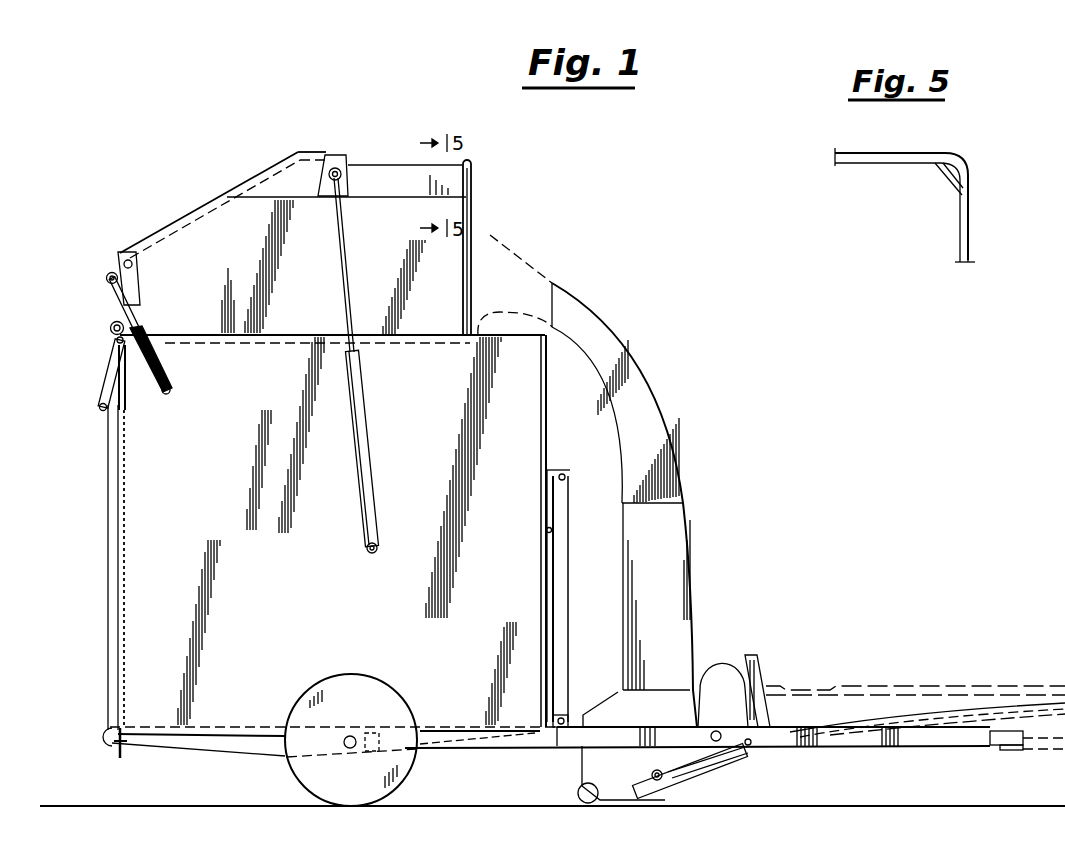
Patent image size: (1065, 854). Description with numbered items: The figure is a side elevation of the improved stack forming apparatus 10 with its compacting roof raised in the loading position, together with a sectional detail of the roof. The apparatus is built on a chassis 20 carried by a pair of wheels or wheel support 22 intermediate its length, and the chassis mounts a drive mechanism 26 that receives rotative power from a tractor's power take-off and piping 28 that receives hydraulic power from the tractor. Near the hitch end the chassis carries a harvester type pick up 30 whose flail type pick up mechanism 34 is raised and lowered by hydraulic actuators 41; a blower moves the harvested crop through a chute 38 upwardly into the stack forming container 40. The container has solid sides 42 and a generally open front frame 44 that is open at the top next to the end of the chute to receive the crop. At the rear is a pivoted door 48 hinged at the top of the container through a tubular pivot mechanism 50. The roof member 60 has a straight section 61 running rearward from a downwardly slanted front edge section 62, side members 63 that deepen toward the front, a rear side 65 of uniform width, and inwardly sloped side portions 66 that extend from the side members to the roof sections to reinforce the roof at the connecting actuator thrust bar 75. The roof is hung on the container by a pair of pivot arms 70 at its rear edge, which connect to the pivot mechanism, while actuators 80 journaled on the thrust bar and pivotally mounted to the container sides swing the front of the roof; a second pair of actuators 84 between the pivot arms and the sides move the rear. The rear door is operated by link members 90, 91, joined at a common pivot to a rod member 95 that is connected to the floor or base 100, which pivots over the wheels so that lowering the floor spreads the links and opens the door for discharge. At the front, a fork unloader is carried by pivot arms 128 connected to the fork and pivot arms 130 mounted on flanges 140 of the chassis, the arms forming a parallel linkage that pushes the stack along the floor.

In FIG. 1, the stack forming apparatus 10 is at (880, 541).
In FIG. 1, the chassis 20 is at (796, 747).
In FIG. 1, the wheels or wheel support 22 is at (400, 770).
In FIG. 1, the drive mechanism 26 is at (720, 680).
In FIG. 1, the piping 28 is at (1004, 705).
In FIG. 1, the harvester type pick up 30 is at (604, 766).
In FIG. 1, the flail type pick up mechanism 34 is at (688, 788).
In FIG. 1, the chute 38 is at (678, 478).
In FIG. 1, the stack forming container 40 is at (104, 657).
In FIG. 1, the hydraulic actuators 41 is at (724, 750).
In FIG. 1, the solid sides 42 is at (374, 592).
In FIG. 1, the open front frame 44 is at (548, 440).
In FIG. 1, the pivoted door 48 is at (108, 557).
In FIG. 1, the tubular pivot mechanism 50 is at (110, 326).
In FIG. 1, the roof member 60 is at (240, 181).
In FIG. 1, the straight section 61 is at (202, 205).
In FIG. 1, the downwardly slanted front edge section 62 is at (405, 165).
In FIG. 1, the side members 63 is at (316, 282).
In FIG. 5, the side members 63 is at (973, 232).
In FIG. 1, the rear side 65 is at (122, 304).
In FIG. 1, the inwardly sloped side portions 66 is at (443, 186).
In FIG. 5, the inwardly sloped side portions 66 is at (960, 172).
In FIG. 1, the pivot arms 70 is at (106, 280).
In FIG. 1, the connecting actuator thrust bar 75 is at (336, 160).
In FIG. 1, the actuators 80 is at (372, 447).
In FIG. 1, the second pair of actuators 84 is at (150, 335).
In FIG. 1, the link member 90 is at (100, 395).
In FIG. 1, the link member 91 is at (118, 362).
In FIG. 1, the rod member 95 is at (120, 625).
In FIG. 1, the floor or base 100 is at (210, 750).
In FIG. 1, the pivot arms 128 is at (550, 502).
In FIG. 1, the pivot arms 130 is at (563, 563).
In FIG. 1, the flanges 140 is at (560, 715).